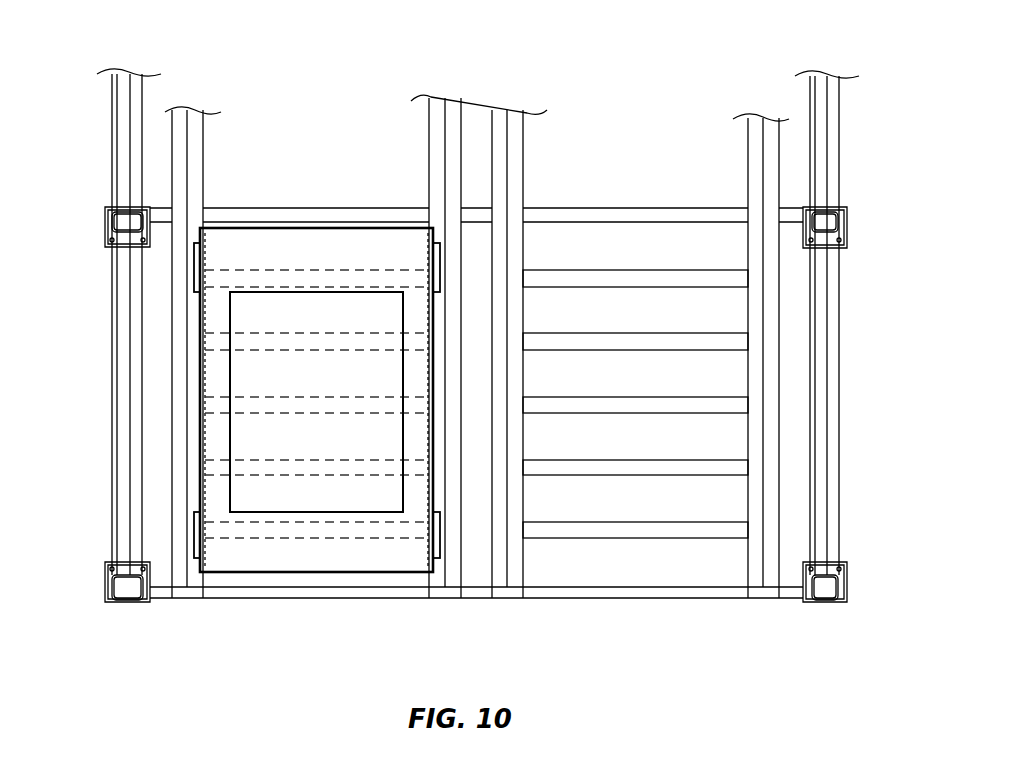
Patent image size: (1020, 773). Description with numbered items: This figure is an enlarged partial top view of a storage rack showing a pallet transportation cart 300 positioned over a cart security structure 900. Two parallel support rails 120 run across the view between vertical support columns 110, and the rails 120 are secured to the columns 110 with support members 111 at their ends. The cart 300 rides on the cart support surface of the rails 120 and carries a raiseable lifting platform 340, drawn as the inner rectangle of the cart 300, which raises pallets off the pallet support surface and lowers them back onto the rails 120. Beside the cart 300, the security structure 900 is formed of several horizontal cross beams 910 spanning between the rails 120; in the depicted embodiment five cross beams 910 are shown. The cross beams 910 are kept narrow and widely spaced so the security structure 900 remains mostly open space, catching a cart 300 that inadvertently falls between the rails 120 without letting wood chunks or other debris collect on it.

The vertical support column 110 is at (124, 220).
The support member 111 is at (160, 210).
The support rail 120 is at (188, 112).
The pallet transportation cart 300 is at (317, 400).
The lifting platform 340 is at (316, 402).
The cart security structure 900 is at (291, 190).
The cross beam 910 is at (588, 275).